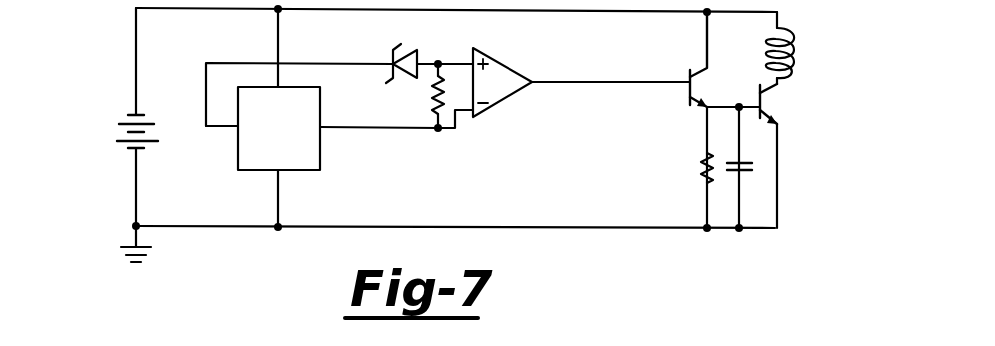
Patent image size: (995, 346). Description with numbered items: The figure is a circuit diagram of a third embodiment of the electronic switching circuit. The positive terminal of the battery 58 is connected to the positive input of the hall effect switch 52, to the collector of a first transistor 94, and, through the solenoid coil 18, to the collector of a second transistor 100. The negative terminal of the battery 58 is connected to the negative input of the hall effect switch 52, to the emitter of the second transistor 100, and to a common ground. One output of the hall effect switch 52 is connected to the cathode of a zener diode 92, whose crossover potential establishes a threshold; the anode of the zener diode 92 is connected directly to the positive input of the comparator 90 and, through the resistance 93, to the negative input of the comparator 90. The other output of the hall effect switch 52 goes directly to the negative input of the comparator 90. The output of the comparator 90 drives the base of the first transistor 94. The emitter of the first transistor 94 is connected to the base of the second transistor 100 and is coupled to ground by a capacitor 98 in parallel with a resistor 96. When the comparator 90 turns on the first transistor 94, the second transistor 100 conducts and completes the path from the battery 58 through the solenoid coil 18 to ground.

The battery 58 is at (130, 142).
The hall effect switch 52 is at (320, 153).
The zener diode 92 is at (404, 46).
The resistance 93 is at (436, 87).
The comparator 90 is at (503, 100).
The first transistor 94 is at (687, 74).
The solenoid coil 18 is at (794, 58).
The second transistor 100 is at (770, 90).
The resistor 96 is at (703, 172).
The capacitor 98 is at (745, 172).